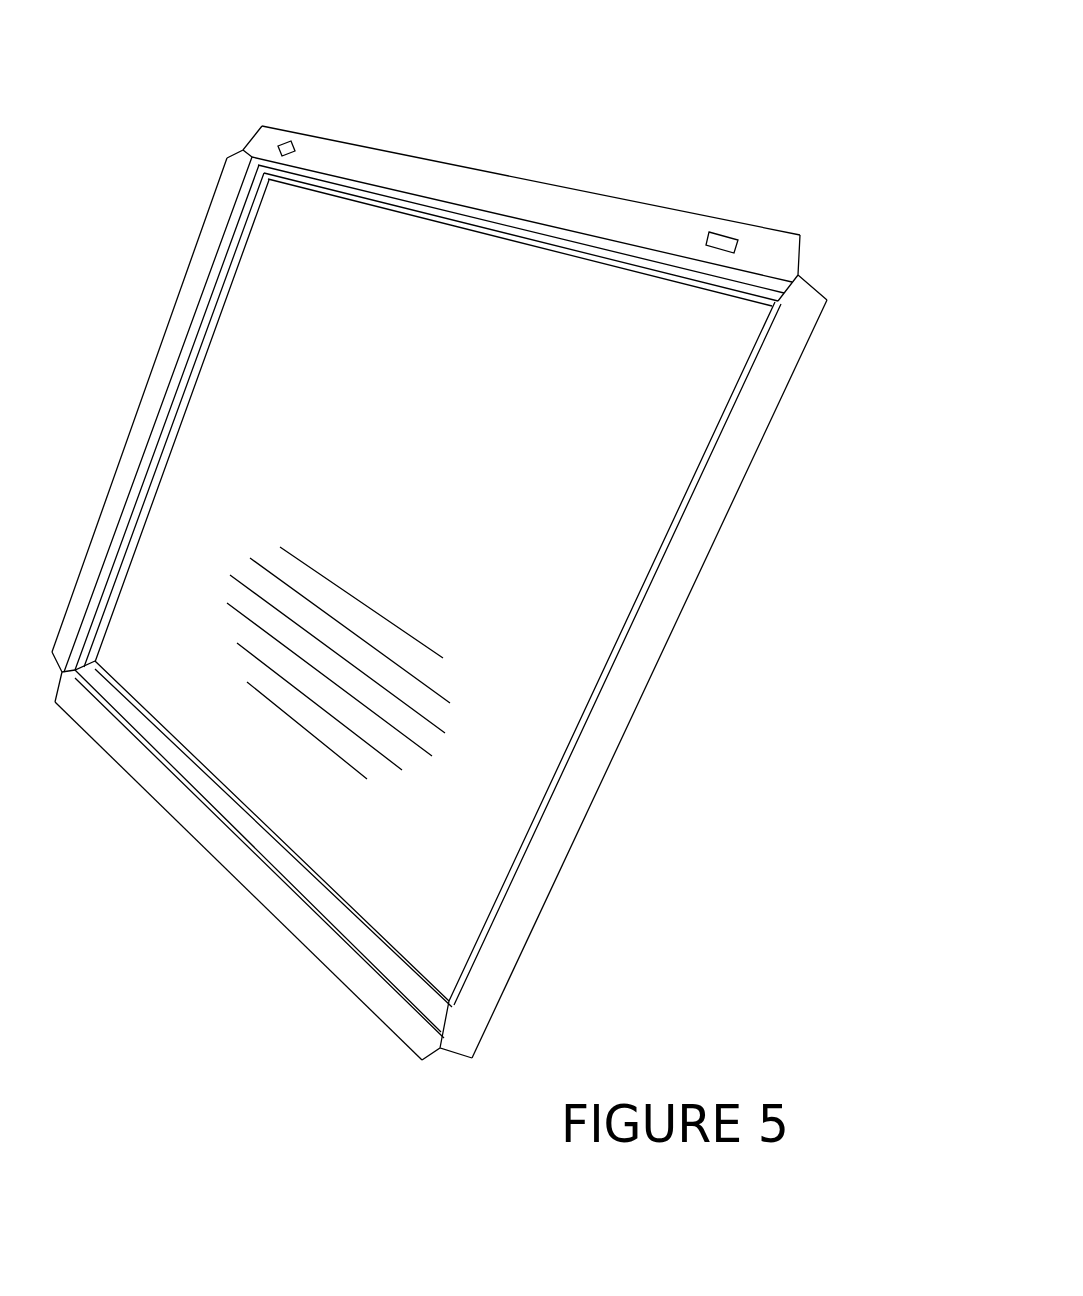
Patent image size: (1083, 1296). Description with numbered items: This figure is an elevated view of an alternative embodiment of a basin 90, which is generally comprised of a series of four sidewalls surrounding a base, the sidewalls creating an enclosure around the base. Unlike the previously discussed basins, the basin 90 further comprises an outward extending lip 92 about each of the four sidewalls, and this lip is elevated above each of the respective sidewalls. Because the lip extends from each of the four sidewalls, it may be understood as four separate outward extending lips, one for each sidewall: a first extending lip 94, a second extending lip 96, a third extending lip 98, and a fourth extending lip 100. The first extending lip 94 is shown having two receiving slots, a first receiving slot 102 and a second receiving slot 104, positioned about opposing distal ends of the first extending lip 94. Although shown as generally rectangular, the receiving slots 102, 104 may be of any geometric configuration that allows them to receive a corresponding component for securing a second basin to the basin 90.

The basin 90 is at (691, 103).
The outward extending lip 92 is at (822, 310).
The first extending lip 94 is at (670, 563).
The second extending lip 96 is at (223, 852).
The third extending lip 98 is at (165, 355).
The fourth extending lip 100 is at (490, 178).
The first receiving slot 102 is at (728, 234).
The second receiving slot 104 is at (282, 146).